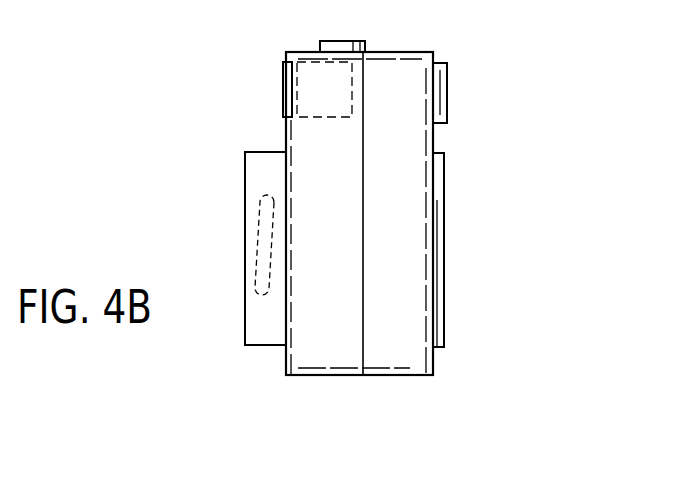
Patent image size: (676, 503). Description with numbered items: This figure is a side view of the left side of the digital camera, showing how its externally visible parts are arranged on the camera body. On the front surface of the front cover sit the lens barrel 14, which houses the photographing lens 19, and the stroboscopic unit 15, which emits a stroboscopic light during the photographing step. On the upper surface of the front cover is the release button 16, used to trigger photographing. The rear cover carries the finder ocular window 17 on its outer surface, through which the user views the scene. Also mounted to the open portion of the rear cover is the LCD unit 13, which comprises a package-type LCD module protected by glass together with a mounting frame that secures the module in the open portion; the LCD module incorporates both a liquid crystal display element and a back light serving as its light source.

The LCD unit 13 is at (444, 325).
The lens barrel 14 is at (258, 346).
The stroboscopic unit 15 is at (283, 90).
The release button 16 is at (336, 40).
The finder ocular window 17 is at (447, 90).
The photographing lens 19 is at (255, 237).